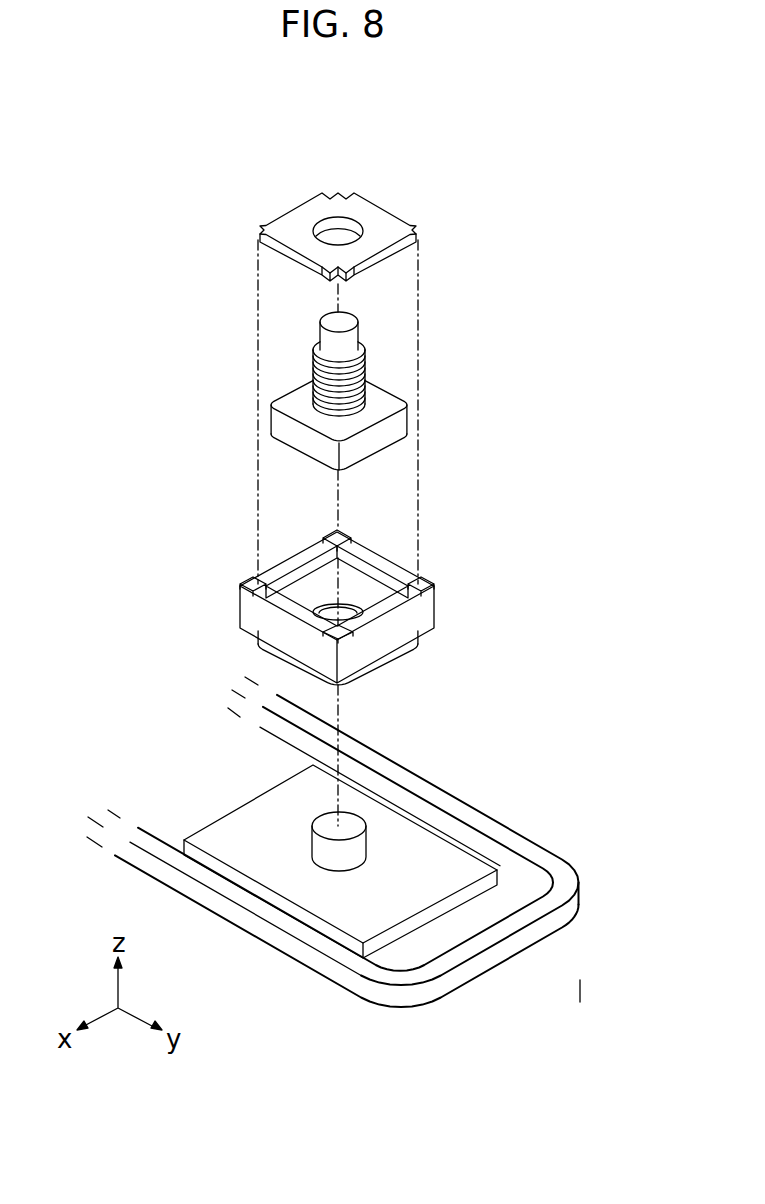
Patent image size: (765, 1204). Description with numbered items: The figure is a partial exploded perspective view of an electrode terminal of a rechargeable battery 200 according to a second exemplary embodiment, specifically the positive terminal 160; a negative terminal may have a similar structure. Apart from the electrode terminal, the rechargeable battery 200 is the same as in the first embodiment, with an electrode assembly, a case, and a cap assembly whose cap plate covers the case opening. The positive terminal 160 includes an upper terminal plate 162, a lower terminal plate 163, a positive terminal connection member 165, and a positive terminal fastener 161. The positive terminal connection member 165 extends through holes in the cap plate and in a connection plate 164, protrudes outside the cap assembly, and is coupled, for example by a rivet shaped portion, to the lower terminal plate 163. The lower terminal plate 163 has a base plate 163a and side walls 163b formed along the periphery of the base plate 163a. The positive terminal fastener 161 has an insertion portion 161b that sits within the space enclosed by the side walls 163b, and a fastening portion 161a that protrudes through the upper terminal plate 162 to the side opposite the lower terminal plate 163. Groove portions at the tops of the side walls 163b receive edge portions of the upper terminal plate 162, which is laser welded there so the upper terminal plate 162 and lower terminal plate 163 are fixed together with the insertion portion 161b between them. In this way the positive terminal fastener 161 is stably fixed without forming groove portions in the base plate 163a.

The rechargeable battery 200 is at (357, 95).
The positive terminal 160 is at (217, 204).
The upper terminal plate 162 is at (406, 231).
The positive terminal fastener 161 is at (518, 347).
The fastening portion 161a is at (360, 372).
The insertion portion 161b is at (402, 425).
The lower terminal plate 163 is at (533, 573).
The side walls 163b is at (430, 596).
The base plate 163a is at (402, 655).
The connection plate 164 is at (462, 858).
The positive terminal connection member 165 is at (330, 843).